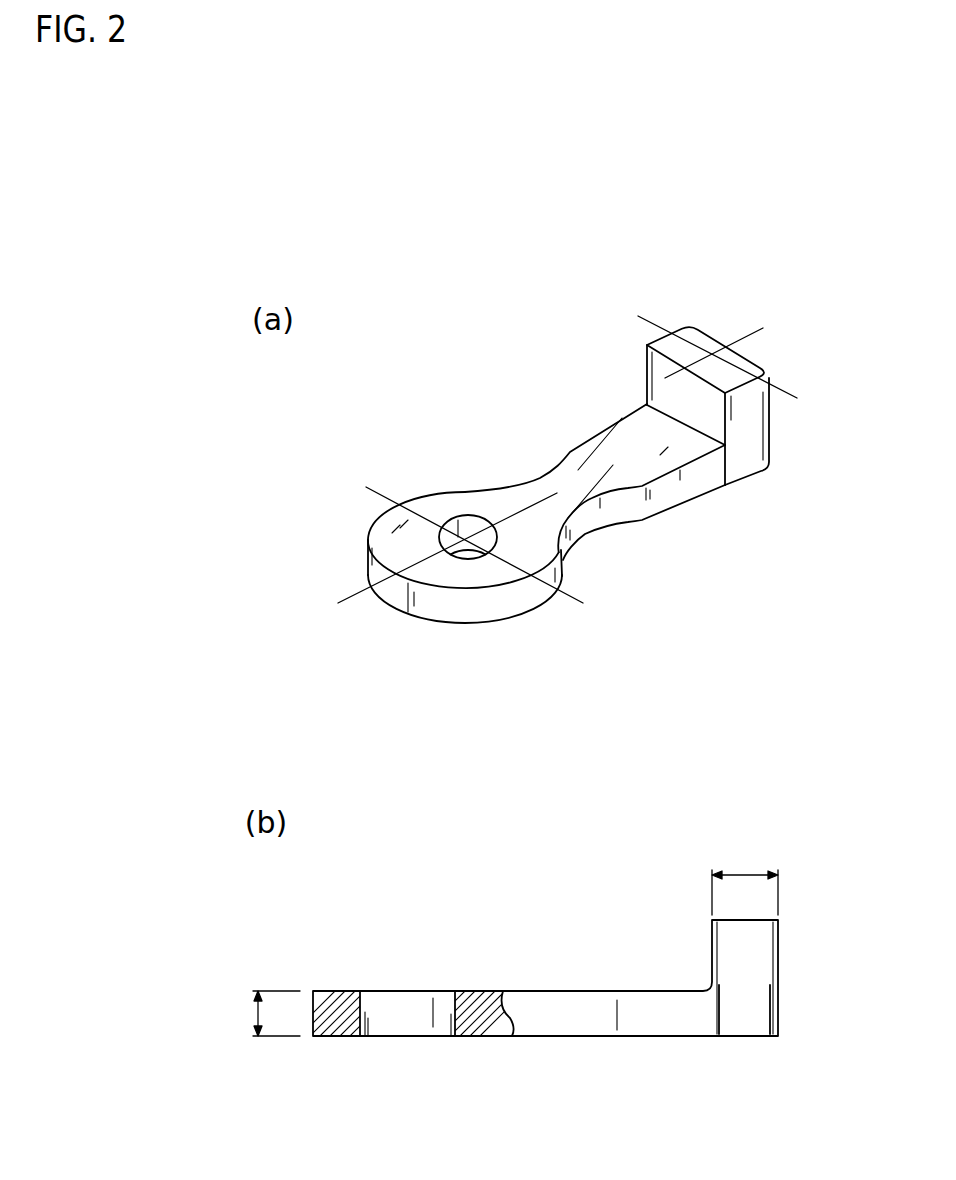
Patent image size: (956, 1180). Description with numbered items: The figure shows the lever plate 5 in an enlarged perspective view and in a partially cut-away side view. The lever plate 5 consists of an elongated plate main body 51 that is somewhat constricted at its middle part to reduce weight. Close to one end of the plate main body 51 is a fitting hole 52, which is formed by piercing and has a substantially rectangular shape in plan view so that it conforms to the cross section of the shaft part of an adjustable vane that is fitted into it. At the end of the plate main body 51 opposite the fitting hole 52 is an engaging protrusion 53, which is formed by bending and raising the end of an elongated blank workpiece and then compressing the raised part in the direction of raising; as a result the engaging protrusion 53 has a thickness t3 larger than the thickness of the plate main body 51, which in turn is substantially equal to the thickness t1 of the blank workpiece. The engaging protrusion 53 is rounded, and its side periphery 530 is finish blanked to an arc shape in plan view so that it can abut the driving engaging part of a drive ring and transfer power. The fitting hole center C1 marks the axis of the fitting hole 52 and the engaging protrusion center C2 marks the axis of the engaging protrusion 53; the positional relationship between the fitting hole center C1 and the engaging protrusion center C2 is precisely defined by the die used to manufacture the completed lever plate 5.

The lever plate 5 is at (648, 277).
The plate main body 51 is at (581, 455).
The fitting hole 52 is at (462, 555).
The engaging protrusion 53 is at (757, 362).
The side periphery 530 is at (757, 527).
The fitting hole center C1 is at (462, 532).
The engaging protrusion center C2 is at (712, 352).
The thickness of blank workpiece t1 is at (262, 1013).
The thickness of engaging protrusion t3 is at (745, 880).